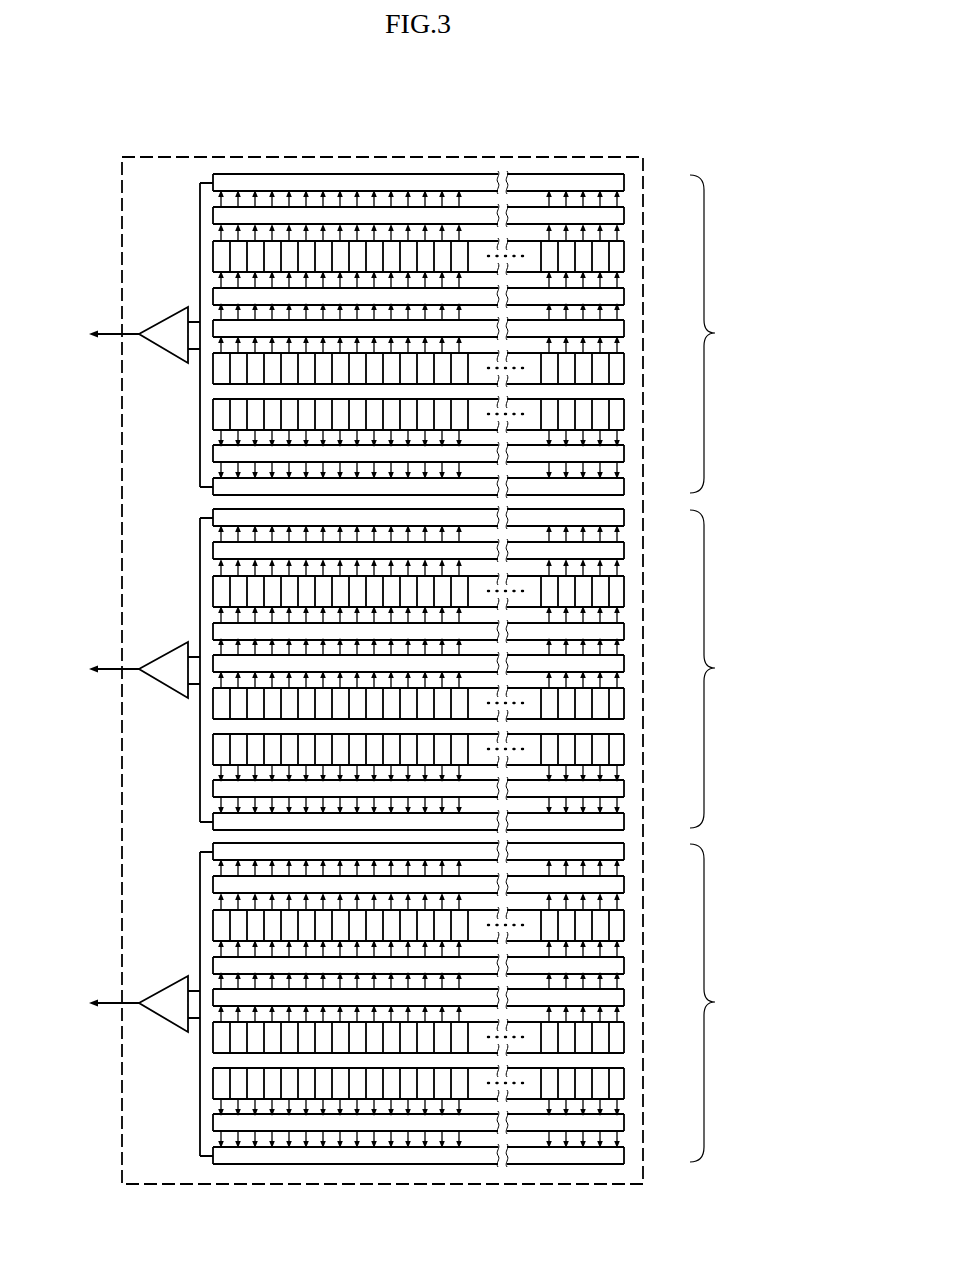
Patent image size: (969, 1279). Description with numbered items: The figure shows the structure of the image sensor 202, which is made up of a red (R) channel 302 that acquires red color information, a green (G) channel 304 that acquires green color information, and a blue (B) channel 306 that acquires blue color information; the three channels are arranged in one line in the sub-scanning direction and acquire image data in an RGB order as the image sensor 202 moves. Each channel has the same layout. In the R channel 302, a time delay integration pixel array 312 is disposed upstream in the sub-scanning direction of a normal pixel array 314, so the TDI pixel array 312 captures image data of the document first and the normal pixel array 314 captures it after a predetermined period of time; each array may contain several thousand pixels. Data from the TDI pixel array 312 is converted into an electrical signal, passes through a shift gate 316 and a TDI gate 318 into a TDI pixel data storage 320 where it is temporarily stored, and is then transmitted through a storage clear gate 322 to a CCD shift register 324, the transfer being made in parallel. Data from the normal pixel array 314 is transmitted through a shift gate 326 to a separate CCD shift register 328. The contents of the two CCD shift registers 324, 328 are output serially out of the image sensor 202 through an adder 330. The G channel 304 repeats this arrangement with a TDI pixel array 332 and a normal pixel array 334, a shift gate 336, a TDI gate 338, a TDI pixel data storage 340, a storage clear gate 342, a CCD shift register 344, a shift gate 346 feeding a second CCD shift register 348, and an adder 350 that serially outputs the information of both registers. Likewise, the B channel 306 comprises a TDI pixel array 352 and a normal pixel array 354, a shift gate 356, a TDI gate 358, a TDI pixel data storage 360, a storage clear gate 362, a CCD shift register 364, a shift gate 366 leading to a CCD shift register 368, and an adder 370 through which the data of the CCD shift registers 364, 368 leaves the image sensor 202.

The image sensor 202 is at (184, 132).
The red (R) channel 302 is at (732, 334).
The green (G) channel 304 is at (732, 669).
The blue (B) channel 306 is at (732, 1003).
The time delay integration pixel array 312 is at (624, 368).
The normal pixel array 314 is at (624, 414).
The shift gate 316 is at (624, 328).
The TDI gate 318 is at (624, 296).
The TDI pixel data storage 320 is at (624, 256).
The storage clear gate 322 is at (624, 216).
The CCD shift register 324 is at (624, 182).
The shift gate 326 is at (624, 454).
The CCD shift register 328 is at (624, 486).
The adder 330 is at (167, 321).
The TDI pixel array 332 is at (449, 703).
The normal pixel array 334 is at (449, 749).
The shift gate 336 is at (449, 663).
The TDI gate 338 is at (449, 631).
The TDI pixel data storage 340 is at (449, 591).
The storage clear gate 342 is at (449, 550).
The CCD shift register 344 is at (449, 517).
The shift gate 346 is at (449, 788).
The CCD shift register 348 is at (449, 821).
The adder 350 is at (146, 670).
The TDI pixel array 352 is at (449, 1037).
The normal pixel array 354 is at (449, 1083).
The shift gate 356 is at (449, 997).
The TDI gate 358 is at (449, 965).
The TDI pixel data storage 360 is at (449, 925).
The storage clear gate 362 is at (449, 884).
The CCD shift register 364 is at (449, 851).
The shift gate 366 is at (449, 1122).
The CCD shift register 368 is at (449, 1155).
The adder 370 is at (146, 1004).